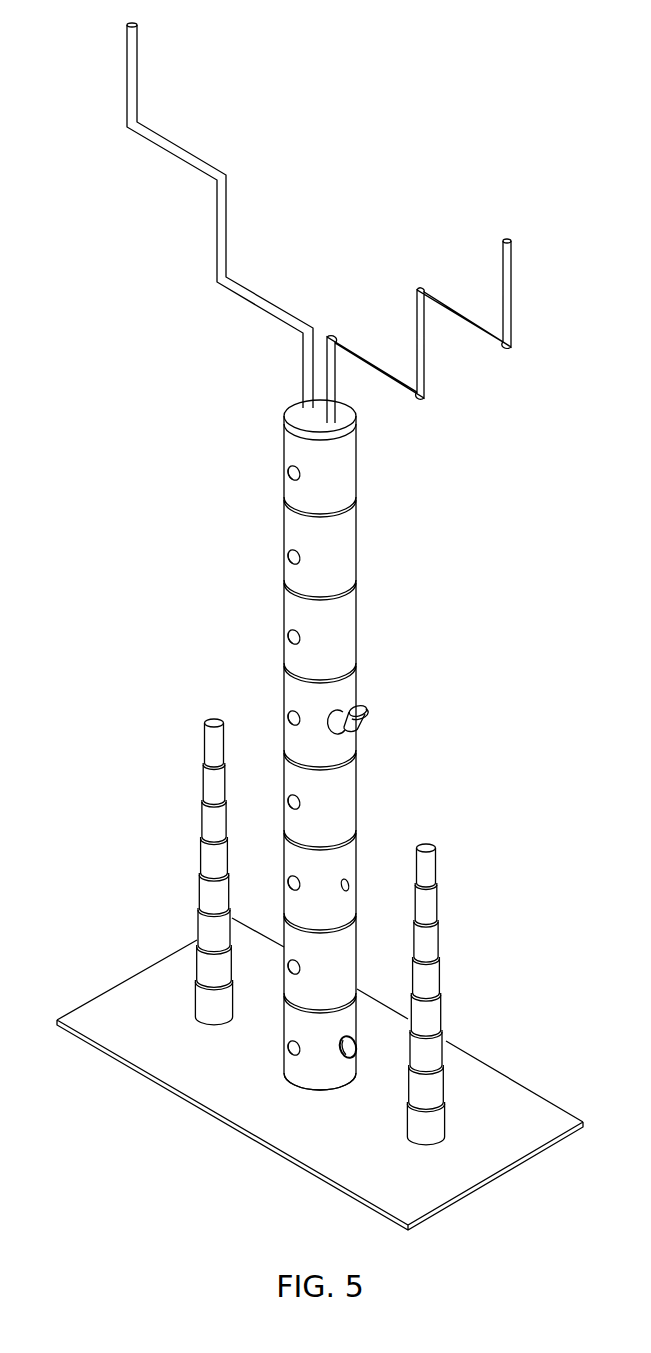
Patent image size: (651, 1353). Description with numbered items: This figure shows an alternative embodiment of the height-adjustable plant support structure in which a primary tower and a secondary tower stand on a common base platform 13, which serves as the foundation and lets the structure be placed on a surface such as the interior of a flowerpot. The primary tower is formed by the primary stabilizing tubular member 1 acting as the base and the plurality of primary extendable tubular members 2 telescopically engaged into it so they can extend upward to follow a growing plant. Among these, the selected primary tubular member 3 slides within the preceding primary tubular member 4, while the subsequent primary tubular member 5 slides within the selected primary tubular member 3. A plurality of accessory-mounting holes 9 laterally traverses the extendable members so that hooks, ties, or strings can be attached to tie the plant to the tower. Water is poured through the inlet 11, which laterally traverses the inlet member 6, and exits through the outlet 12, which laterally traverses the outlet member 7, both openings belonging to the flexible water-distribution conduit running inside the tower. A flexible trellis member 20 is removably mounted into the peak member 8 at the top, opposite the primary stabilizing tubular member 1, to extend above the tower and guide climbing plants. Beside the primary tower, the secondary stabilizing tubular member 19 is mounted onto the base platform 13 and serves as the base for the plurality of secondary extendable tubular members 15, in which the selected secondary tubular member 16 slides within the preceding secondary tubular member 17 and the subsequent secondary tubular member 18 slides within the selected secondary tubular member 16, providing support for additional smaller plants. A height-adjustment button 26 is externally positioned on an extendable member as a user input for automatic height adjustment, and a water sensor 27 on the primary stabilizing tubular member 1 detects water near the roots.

The primary stabilizing tubular member 1 is at (320, 1089).
The plurality of primary extendable tubular members 2 is at (287, 770).
The selected primary tubular member 3 is at (288, 695).
The preceding primary tubular member 4 is at (288, 608).
The subsequent primary tubular member 5 is at (288, 533).
The inlet member 6 is at (370, 704).
The outlet member 7 is at (345, 1079).
The peak member 8 is at (343, 455).
The plurality of accessory-mounting holes 9 is at (284, 881).
The inlet 11 is at (362, 706).
The outlet 12 is at (352, 1044).
The base platform 13 is at (75, 1016).
The plurality of secondary extendable tubular members 15 is at (152, 872).
The selected secondary tubular member 16 is at (207, 856).
The preceding secondary tubular member 17 is at (205, 890).
The subsequent secondary tubular member 18 is at (207, 822).
The secondary stabilizing tubular member 19 is at (202, 1005).
The flexible trellis member 20 is at (511, 246).
The height-adjustment button 26 is at (348, 884).
The water sensor 27 is at (282, 1047).